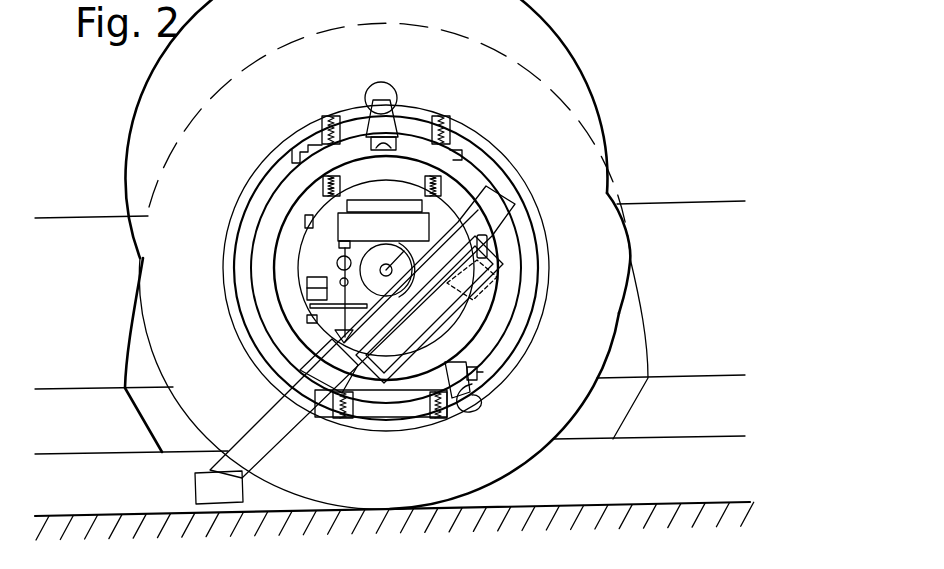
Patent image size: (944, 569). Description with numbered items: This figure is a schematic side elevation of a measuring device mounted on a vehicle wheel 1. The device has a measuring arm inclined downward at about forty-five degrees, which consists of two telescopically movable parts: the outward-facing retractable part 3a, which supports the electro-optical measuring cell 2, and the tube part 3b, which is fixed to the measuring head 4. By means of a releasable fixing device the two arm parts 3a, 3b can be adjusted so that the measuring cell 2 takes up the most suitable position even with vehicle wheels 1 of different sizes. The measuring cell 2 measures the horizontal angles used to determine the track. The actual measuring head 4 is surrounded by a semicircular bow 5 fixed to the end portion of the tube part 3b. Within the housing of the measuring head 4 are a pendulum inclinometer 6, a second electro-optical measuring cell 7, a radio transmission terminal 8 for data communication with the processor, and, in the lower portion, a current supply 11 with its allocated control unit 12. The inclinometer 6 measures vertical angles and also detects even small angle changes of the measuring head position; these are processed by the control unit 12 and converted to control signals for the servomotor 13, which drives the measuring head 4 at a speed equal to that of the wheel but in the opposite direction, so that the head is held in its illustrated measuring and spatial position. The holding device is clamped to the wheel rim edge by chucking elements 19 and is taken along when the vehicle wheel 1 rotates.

The vehicle wheel 1 is at (198, 152).
The electro-optical measuring cell 2 is at (199, 489).
The retractable part 3a is at (262, 428).
The tube part 3b is at (356, 396).
The measuring head 4 is at (467, 197).
The semicircular bow 5 is at (320, 163).
The pendulum inclinometer 6 is at (333, 267).
The second electro-optical measuring cell 7 is at (346, 232).
The radio transmission terminal 8 is at (346, 207).
The current supply 11 is at (445, 323).
The control unit 12 is at (483, 370).
The servomotor 13 is at (410, 249).
The chucking element 19 is at (470, 400).